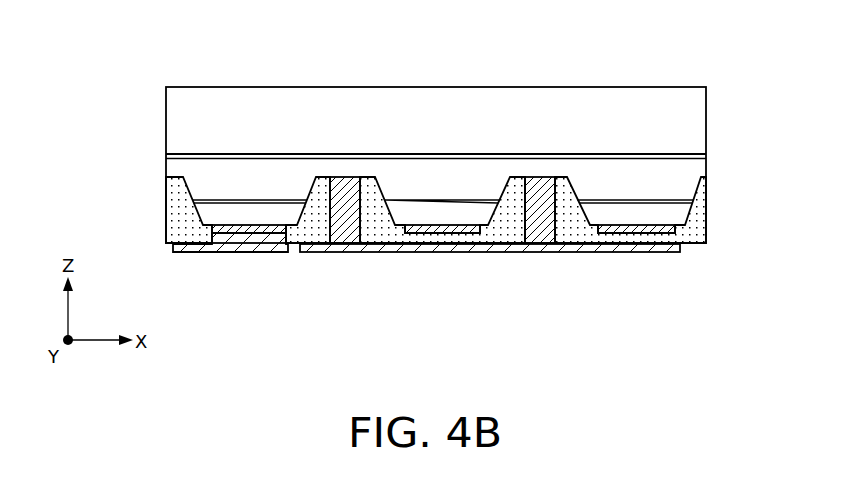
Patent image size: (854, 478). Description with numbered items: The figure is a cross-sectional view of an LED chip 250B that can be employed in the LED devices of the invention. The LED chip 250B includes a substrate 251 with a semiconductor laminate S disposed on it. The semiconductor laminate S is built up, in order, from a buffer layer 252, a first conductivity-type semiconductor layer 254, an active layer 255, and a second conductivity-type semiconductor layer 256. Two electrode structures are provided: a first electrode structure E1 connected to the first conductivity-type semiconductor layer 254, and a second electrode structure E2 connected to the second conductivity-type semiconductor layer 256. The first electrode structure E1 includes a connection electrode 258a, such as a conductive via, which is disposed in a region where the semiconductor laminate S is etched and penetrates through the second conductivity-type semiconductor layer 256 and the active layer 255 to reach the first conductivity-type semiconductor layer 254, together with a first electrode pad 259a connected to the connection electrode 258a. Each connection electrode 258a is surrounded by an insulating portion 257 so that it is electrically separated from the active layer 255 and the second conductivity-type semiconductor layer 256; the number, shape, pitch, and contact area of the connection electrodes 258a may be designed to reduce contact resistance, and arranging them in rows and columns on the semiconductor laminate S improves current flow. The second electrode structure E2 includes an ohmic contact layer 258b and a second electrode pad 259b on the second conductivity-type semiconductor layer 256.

The LED chip 250B is at (467, 48).
The substrate 251 is at (173, 120).
The buffer layer 252 is at (682, 157).
The first conductivity-type semiconductor layer 254 is at (678, 183).
The active layer 255 is at (682, 202).
The second conductivity-type semiconductor layer 256 is at (678, 217).
The insulating portion 257 is at (177, 185).
The connection electrode 258a is at (540, 237).
The ohmic contact layer 258b is at (222, 228).
The first electrode pad 259a is at (653, 247).
The second electrode pad 259b is at (270, 240).
The first electrode structure E1 is at (657, 302).
The second electrode structure E2 is at (292, 302).
The semiconductor laminate S is at (782, 160).